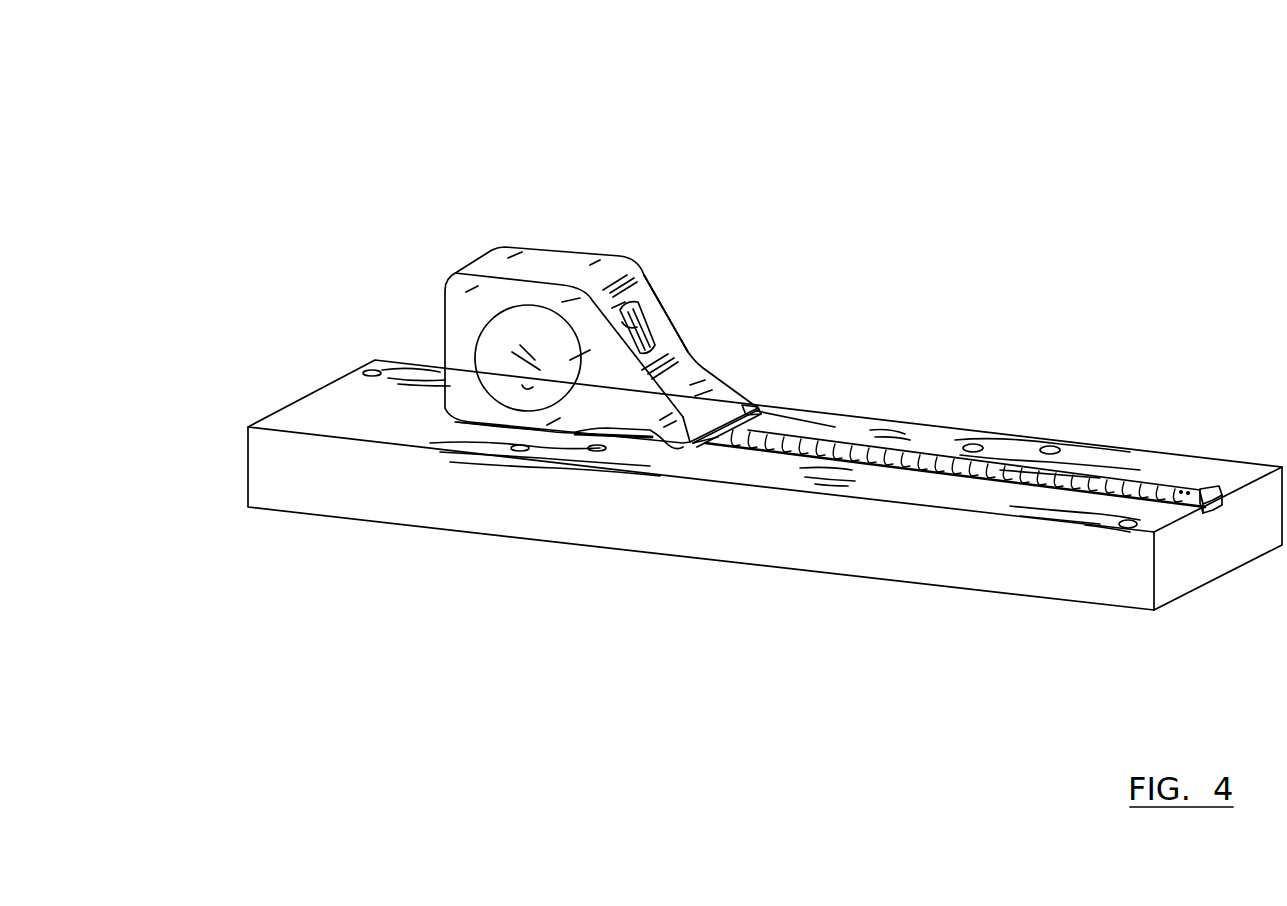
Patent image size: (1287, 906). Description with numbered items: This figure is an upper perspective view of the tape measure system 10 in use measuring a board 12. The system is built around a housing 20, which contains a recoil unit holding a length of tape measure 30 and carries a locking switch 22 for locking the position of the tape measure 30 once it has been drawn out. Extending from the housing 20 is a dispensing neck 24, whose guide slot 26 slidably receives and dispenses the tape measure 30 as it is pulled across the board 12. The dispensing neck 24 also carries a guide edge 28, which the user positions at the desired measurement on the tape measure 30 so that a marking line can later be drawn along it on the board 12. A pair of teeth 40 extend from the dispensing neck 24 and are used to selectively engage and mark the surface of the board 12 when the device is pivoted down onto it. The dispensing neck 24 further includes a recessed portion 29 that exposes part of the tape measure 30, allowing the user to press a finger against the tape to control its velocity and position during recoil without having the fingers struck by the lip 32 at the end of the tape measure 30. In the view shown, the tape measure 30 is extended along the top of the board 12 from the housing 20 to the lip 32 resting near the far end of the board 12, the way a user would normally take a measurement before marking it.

The tape measure system 10 is at (992, 182).
The board 12 is at (798, 533).
The housing 20 is at (560, 250).
The locking switch 22 is at (640, 305).
The dispensing neck 24 is at (710, 385).
The guide slot 26 is at (778, 445).
The guide edge 28 is at (717, 422).
The recessed portion 29 is at (517, 453).
The tape measure 30 is at (635, 432).
The lip 32 is at (1220, 507).
The teeth 40 is at (718, 437).